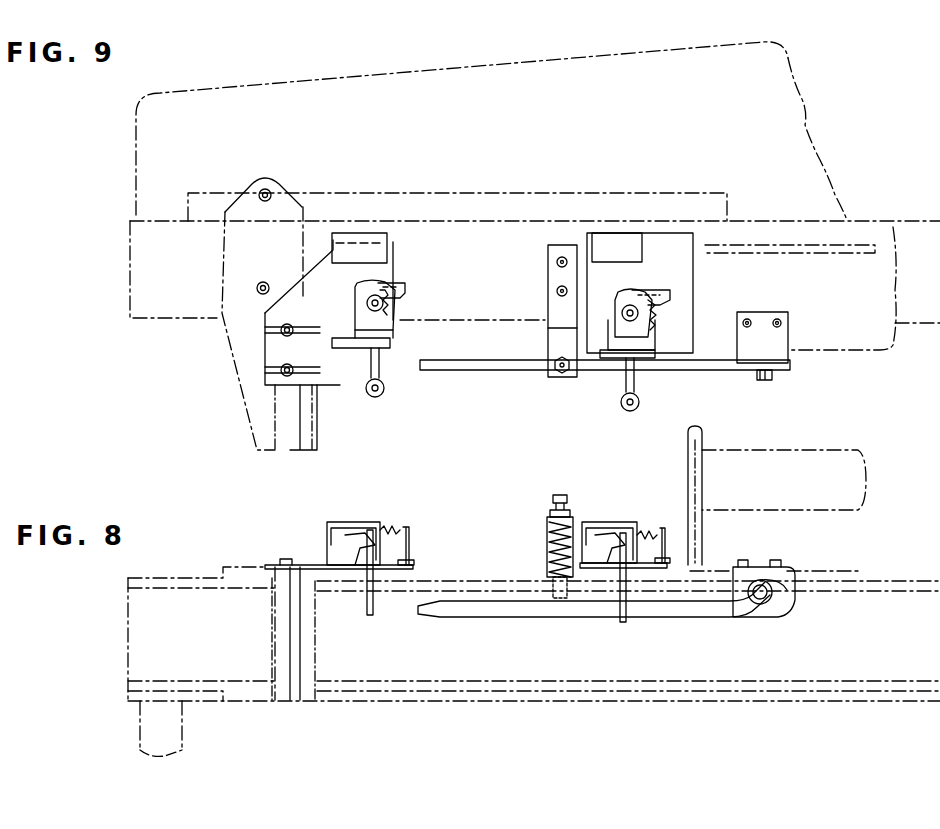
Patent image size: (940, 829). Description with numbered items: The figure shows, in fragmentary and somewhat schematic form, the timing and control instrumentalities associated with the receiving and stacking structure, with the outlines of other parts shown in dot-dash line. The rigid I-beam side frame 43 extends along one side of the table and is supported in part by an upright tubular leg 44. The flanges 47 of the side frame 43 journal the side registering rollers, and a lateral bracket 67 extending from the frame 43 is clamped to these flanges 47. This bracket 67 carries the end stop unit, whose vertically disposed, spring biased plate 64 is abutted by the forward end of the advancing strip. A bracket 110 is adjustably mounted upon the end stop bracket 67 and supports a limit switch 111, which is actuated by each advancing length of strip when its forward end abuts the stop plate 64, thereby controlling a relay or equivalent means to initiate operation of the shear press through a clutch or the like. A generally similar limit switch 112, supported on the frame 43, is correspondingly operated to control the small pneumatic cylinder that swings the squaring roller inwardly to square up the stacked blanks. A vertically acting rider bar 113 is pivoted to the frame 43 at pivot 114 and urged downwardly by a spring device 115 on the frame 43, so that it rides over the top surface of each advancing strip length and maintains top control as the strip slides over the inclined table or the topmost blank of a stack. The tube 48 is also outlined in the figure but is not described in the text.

In FIG. 9, the side frame 43 is at (655, 87).
In FIG. 8, the side frame 43 is at (423, 570).
In FIG. 8, the tubular leg 44 is at (182, 735).
In FIG. 9, the flanges 47 is at (485, 210).
In FIG. 8, the flanges 47 is at (410, 587).
In FIG. 9, the tube 48 is at (837, 260).
In FIG. 8, the tube 48 is at (848, 516).
In FIG. 9, the spring biased plate 64 is at (308, 452).
In FIG. 8, the spring biased plate 64 is at (305, 658).
In FIG. 9, the lateral bracket 67 is at (265, 418).
In FIG. 8, the lateral bracket 67 is at (280, 625).
In FIG. 9, the bracket 110 is at (332, 375).
In FIG. 8, the bracket 110 is at (312, 563).
In FIG. 9, the limit switch 111 is at (402, 341).
In FIG. 8, the limit switch 111 is at (393, 515).
In FIG. 9, the limit switch 112 is at (678, 310).
In FIG. 8, the limit switch 112 is at (632, 520).
In FIG. 9, the rider bar 113 is at (695, 370).
In FIG. 8, the rider bar 113 is at (653, 610).
In FIG. 8, the pivot 114 is at (762, 605).
In FIG. 8, the spring device 115 is at (545, 548).